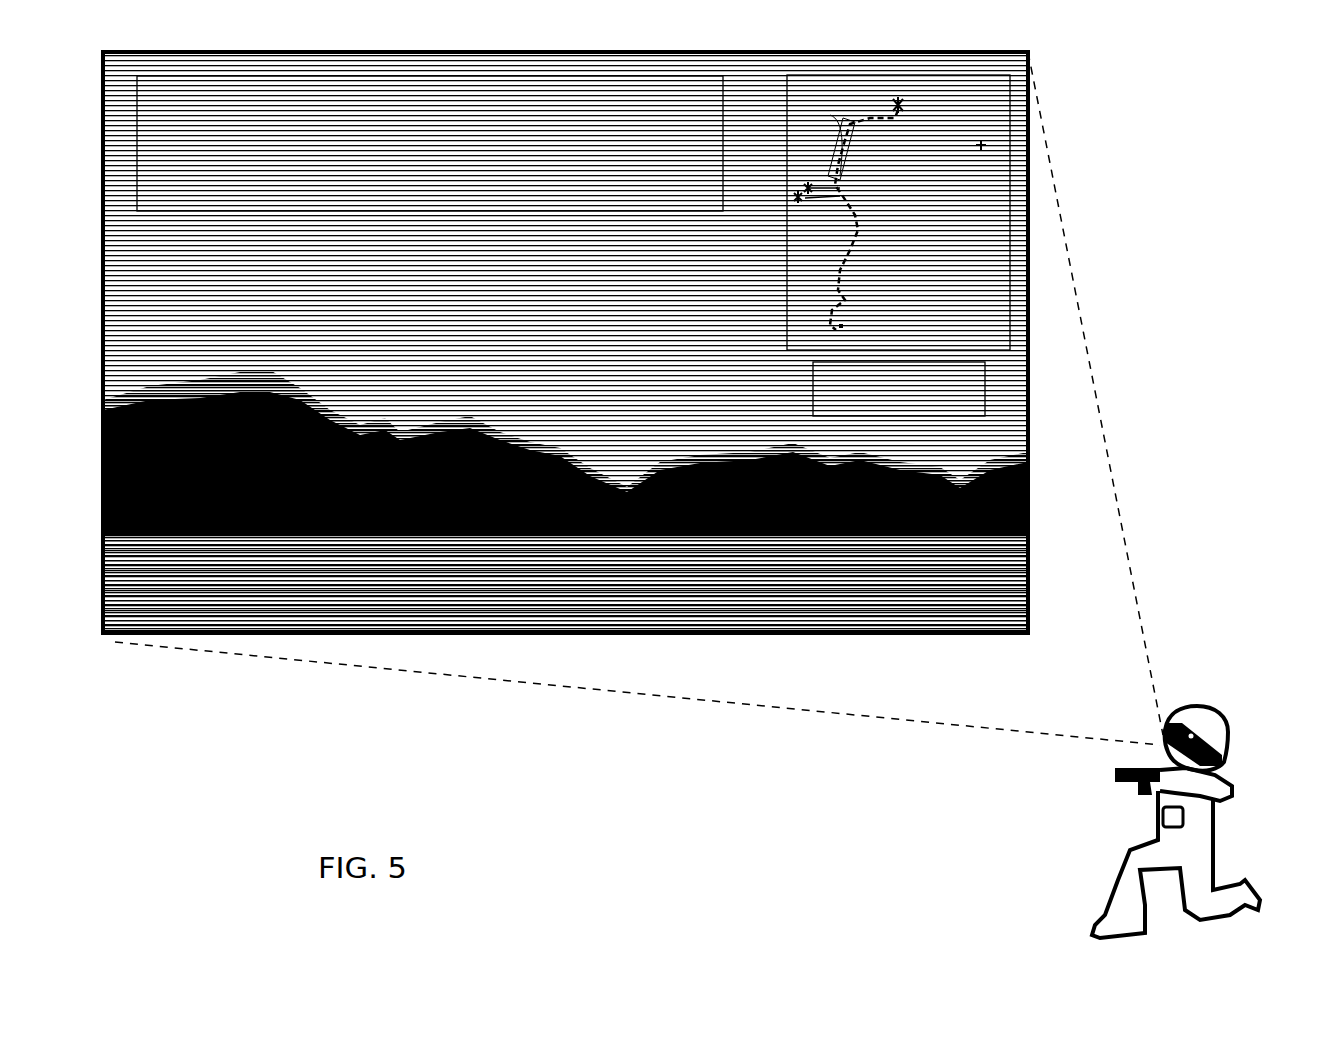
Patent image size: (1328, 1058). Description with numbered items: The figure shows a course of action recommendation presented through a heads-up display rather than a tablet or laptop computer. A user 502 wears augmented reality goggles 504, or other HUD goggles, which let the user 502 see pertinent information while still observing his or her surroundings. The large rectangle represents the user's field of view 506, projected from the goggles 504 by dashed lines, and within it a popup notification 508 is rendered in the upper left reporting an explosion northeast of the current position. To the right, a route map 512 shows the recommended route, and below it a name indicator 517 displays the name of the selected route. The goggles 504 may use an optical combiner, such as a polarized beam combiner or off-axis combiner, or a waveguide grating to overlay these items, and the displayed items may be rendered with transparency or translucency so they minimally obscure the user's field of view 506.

The user 502 is at (1212, 720).
The augmented reality goggles 504 is at (1203, 742).
The user's field of view 506 is at (918, 52).
The popup notification 508 is at (537, 187).
The route map 512 is at (813, 262).
The name indicator 517 is at (820, 386).